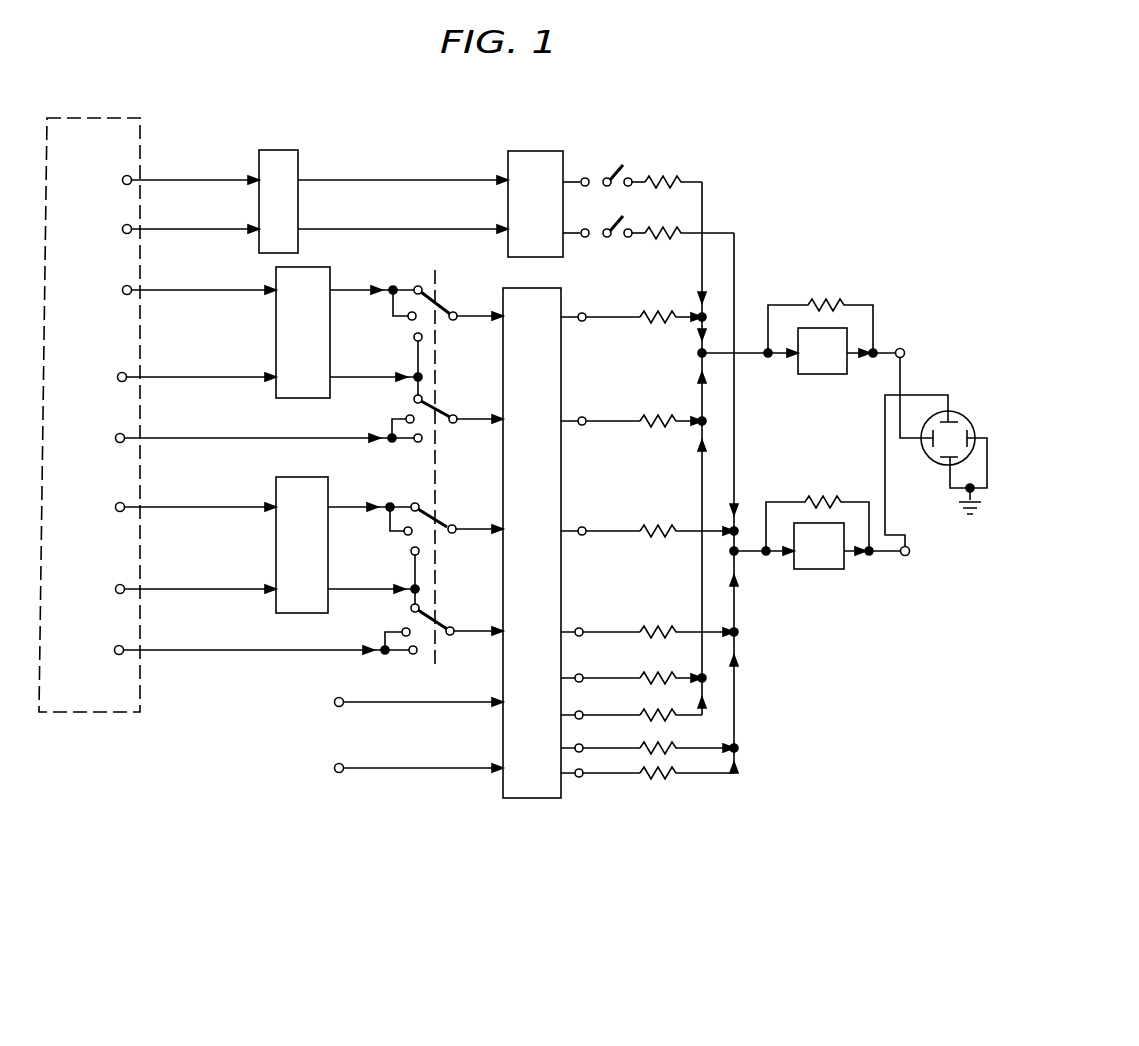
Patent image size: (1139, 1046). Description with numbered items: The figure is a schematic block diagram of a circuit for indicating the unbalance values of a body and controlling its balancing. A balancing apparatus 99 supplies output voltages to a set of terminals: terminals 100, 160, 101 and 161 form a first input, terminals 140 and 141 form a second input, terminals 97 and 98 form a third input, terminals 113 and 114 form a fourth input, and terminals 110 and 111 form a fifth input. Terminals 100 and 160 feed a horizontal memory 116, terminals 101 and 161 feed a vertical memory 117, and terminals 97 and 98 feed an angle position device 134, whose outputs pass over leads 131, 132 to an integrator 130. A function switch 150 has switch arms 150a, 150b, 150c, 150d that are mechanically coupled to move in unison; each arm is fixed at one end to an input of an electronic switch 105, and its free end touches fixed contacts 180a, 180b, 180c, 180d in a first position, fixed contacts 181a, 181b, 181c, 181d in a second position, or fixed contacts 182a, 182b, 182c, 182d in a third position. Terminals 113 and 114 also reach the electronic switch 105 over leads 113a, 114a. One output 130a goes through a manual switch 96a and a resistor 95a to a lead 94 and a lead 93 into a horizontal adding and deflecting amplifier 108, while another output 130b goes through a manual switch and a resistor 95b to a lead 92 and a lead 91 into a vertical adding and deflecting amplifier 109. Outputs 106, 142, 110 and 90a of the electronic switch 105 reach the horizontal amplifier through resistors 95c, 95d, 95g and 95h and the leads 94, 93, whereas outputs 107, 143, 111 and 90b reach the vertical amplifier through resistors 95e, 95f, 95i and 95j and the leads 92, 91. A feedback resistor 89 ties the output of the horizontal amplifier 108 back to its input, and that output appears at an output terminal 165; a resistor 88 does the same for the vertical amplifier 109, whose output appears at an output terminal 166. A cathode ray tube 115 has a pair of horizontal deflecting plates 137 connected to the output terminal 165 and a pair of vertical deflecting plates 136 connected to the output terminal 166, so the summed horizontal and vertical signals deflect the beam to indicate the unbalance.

The balancing apparatus 99 is at (40, 714).
The terminal 98 is at (123, 180).
The terminal 97 is at (123, 229).
The terminal 100 is at (123, 290).
The terminal 160 is at (118, 377).
The terminal 140 is at (116, 438).
The terminal 101 is at (116, 507).
The terminal 161 is at (116, 589).
The terminal 141 is at (115, 650).
The angle position device 134 is at (302, 100).
The lead 131 is at (403, 168).
The lead 132 is at (311, 229).
The integrator 130 is at (535, 150).
The output 130a is at (588, 176).
The output 130b is at (626, 228).
The manual switch 96a is at (632, 177).
The resistor 95a is at (680, 176).
The resistor 95b is at (668, 237).
The lead 94 is at (705, 208).
The lead 92 is at (736, 262).
The electronic switch 105 is at (504, 800).
The output 106 is at (584, 316).
The resistor 95c is at (666, 325).
The output 142 is at (588, 417).
The resistor 95d is at (664, 406).
The output 107 is at (587, 527).
The resistor 95e is at (658, 524).
The output 143 is at (582, 628).
The resistor 95f is at (665, 617).
The output 110 is at (581, 674).
The resistor 95g is at (673, 672).
The output 90a is at (600, 703).
The resistor 95h is at (667, 704).
The output 111 is at (578, 747).
The resistor 95i is at (660, 745).
The output 90b is at (578, 778).
The resistor 95j is at (663, 779).
The lead 93 is at (748, 350).
The feedback resistor 89 is at (817, 300).
The horizontal adding and deflecting amplifier 108 is at (930, 322).
The output terminal 165 is at (905, 352).
The lead 91 is at (748, 556).
The resistor 88 is at (825, 501).
The vertical adding and deflecting amplifier 109 is at (813, 562).
The output terminal 166 is at (910, 551).
The cathode ray tube 115 is at (1005, 452).
The vertical deflecting plates 136 is at (962, 424).
The horizontal deflecting plates 137 is at (975, 438).
The horizontal memory 116 is at (285, 282).
The vertical memory 117 is at (284, 493).
The function switch 150 is at (490, 270).
The switch arm 150a is at (454, 314).
The switch arm 150b is at (446, 417).
The switch arm 150c is at (448, 523).
The switch arm 150d is at (446, 629).
The fixed contact 180a is at (394, 286).
The fixed contact 180b is at (414, 400).
The fixed contact 180c is at (414, 502).
The fixed contact 180d is at (412, 608).
The fixed contact 181a is at (406, 319).
The fixed contact 181b is at (406, 418).
The fixed contact 181c is at (404, 534).
The fixed contact 181d is at (404, 630).
The fixed contact 182a is at (414, 339).
The fixed contact 182b is at (418, 442).
The fixed contact 182c is at (412, 556).
The fixed contact 182d is at (416, 654).
The terminal 113 is at (334, 704).
The lead 113a is at (372, 704).
The terminal 114 is at (334, 769).
The lead 114a is at (372, 772).